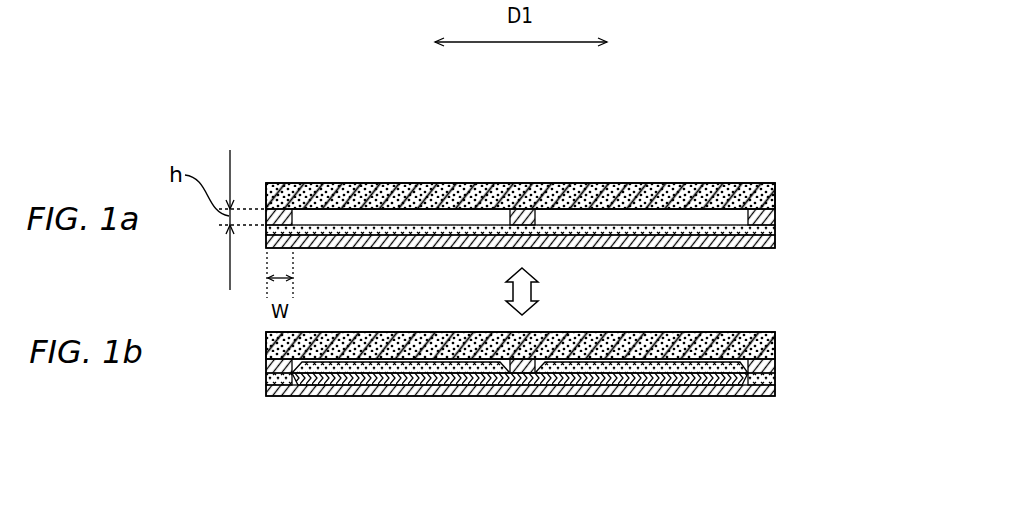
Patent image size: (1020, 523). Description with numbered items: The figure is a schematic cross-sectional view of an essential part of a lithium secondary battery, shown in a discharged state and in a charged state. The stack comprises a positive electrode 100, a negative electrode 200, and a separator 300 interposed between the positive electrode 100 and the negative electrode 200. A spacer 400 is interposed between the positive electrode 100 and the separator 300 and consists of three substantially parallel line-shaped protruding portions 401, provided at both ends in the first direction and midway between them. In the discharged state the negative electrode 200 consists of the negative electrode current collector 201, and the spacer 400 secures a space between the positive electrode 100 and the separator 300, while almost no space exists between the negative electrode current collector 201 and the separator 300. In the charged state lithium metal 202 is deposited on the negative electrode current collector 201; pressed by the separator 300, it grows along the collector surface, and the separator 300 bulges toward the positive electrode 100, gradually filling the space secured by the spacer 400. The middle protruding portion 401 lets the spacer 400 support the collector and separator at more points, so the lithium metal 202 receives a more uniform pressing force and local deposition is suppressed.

In FIG. 1a, the positive electrode 100 is at (762, 199).
In FIG. 1a, the negative electrode 200 is at (703, 243).
In FIG. 1b, the negative electrode 200 is at (520, 432).
In FIG. 1a, the negative electrode current collector 201 is at (534, 271).
In FIG. 1b, the negative electrode current collector 201 is at (517, 453).
In FIG. 1b, the lithium metal 202 is at (487, 393).
In FIG. 1a, the separator 300 is at (772, 232).
In FIG. 1a, the spacer 400 is at (520, 159).
In FIG. 1a, the line-shaped protruding portion 401 is at (505, 213).